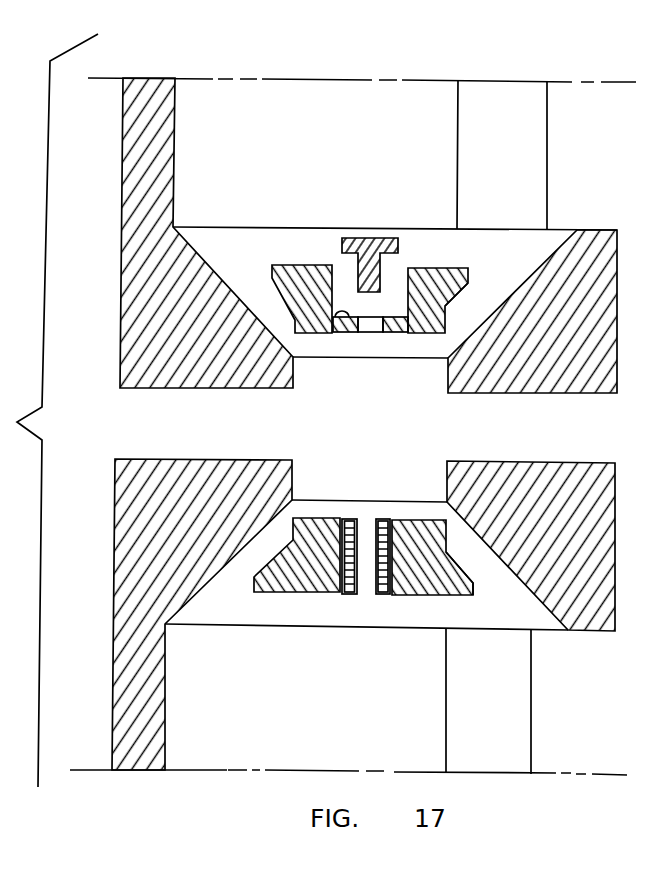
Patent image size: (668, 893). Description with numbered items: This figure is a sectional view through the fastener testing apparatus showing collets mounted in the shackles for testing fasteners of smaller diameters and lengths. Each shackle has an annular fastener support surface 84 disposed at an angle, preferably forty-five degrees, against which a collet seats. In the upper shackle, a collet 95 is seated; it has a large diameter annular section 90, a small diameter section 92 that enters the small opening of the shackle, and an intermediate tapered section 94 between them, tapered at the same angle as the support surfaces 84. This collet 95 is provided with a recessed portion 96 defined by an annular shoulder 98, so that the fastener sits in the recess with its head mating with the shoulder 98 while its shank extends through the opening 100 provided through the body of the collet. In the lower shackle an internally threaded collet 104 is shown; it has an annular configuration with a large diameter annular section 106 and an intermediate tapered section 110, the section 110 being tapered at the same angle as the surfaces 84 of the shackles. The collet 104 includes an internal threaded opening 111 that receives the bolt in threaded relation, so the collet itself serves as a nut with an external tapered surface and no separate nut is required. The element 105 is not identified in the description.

The annular fastener support surface 84 is at (261, 307).
The large diameter annular section 90 is at (473, 275).
The small diameter section 92 is at (447, 320).
The intermediate tapered section 94 is at (285, 290).
The collet 95 is at (467, 290).
The recessed portion 96 is at (392, 273).
The annular shoulder 98 is at (338, 318).
The opening 100 is at (372, 327).
The collet 104 is at (455, 543).
The lower left die block 105 is at (277, 543).
The large diameter annular section 106 is at (473, 583).
The intermediate tapered section 110 is at (260, 568).
The internal threaded opening 111 is at (373, 527).